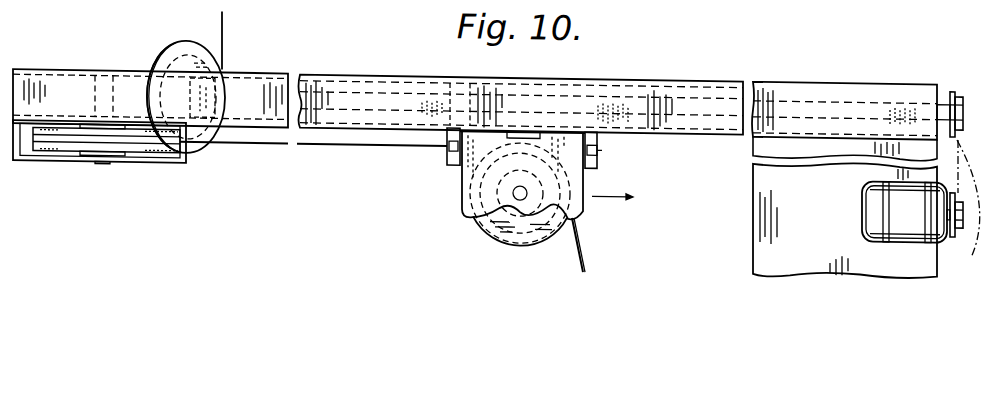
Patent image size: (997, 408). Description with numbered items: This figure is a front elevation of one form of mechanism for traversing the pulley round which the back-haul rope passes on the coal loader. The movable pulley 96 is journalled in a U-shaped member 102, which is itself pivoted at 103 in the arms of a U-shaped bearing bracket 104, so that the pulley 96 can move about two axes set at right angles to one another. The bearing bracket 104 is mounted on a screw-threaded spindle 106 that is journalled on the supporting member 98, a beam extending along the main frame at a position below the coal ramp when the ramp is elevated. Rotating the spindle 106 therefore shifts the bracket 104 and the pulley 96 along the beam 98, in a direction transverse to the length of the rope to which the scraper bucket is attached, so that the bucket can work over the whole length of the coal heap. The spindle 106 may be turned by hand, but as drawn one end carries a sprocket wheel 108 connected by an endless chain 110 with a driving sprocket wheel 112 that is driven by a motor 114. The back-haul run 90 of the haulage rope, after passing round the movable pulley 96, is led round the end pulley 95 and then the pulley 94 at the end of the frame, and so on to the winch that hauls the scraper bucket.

The pulley 94 is at (170, 43).
The end pulley 95 is at (143, 150).
The U-shaped bearing bracket 104 is at (470, 75).
The screw-threaded spindle 106 is at (610, 92).
The sprocket wheel 108 is at (957, 85).
The pivot 103 is at (450, 147).
The U-shaped member 102 is at (462, 195).
The movable pulley 96 is at (490, 223).
The supporting member 98 is at (706, 125).
The back-haul run 90 is at (578, 232).
The motor 114 is at (862, 203).
The driving sprocket wheel 112 is at (953, 226).
The endless chain 110 is at (957, 238).